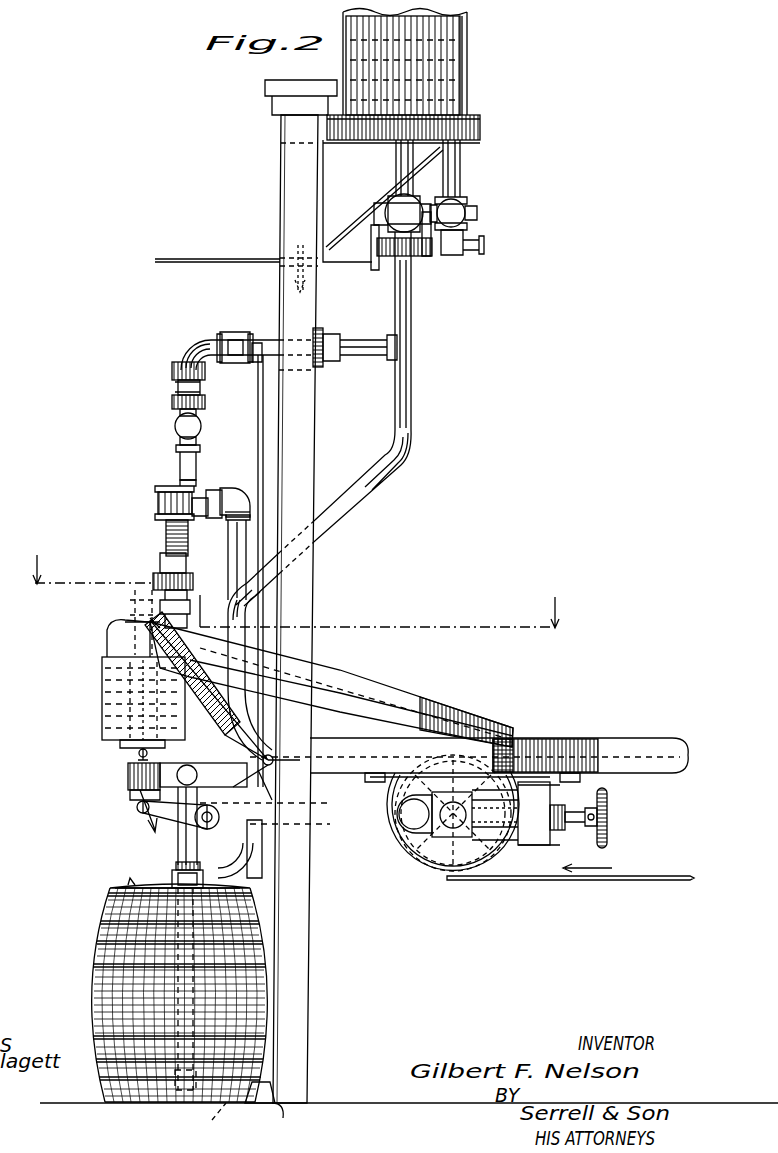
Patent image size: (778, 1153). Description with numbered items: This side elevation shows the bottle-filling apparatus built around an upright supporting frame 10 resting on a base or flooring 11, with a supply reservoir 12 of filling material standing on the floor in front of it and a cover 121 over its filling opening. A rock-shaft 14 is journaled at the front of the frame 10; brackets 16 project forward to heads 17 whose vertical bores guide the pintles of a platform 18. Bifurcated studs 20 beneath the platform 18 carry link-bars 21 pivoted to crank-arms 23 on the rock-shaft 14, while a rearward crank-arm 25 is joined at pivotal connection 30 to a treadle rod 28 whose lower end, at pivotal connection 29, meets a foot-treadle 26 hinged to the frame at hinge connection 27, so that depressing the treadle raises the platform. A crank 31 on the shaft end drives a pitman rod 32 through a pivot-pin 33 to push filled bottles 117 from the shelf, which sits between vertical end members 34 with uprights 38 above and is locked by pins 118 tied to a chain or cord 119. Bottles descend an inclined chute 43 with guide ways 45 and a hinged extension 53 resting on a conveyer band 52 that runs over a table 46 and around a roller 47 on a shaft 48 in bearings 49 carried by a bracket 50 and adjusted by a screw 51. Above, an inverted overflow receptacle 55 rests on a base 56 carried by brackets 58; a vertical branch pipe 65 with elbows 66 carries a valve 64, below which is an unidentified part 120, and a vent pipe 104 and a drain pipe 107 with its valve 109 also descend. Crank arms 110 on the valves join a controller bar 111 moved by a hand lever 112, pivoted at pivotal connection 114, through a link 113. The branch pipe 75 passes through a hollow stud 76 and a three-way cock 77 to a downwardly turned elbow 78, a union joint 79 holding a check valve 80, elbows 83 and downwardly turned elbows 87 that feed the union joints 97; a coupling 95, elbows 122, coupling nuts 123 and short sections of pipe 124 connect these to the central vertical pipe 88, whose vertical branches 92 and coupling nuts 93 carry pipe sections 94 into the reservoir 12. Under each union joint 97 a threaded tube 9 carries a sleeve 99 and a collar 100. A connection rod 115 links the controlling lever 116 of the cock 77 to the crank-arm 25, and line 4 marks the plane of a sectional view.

The section line 4- 4 is at (289, 602).
The tube 9 is at (164, 537).
The upright supporting frame 10 is at (301, 591).
The base or flooring 11 is at (333, 1103).
The reservoir 12 is at (110, 988).
The rock-shaft 14 is at (150, 830).
The brackets 16 is at (203, 775).
The enlarged ends or heads 17 is at (130, 796).
The platform 18 is at (118, 742).
The bifurcated studs 20 is at (138, 753).
The link-bars 21 is at (130, 775).
The crank-arms 23 is at (195, 818).
The crank-arm 25 is at (272, 802).
The foot-treadle 26 is at (265, 1085).
The hinge connection 27 is at (286, 1120).
The treadle rod 28 is at (262, 872).
The pivotal connection 29 is at (212, 1122).
The pivotal connection 30 is at (298, 825).
The crank 31 is at (268, 766).
The pitman rod 32 is at (212, 730).
The pivot-pin 33 is at (270, 756).
The vertical end member 34 is at (143, 698).
The uprights 38 is at (107, 642).
The inclined chute 43 is at (345, 712).
The guide ways 45 is at (390, 700).
The table 46 is at (469, 760).
The roller or cylinder 47 is at (490, 845).
The shaft 48 is at (452, 828).
The bearings 49 is at (440, 830).
The bracket 50 is at (400, 825).
The screw 51 is at (560, 830).
The conveyer band 52 is at (655, 870).
The hinged extension 53 is at (495, 738).
The inverted overflow receptacle 55 is at (462, 72).
The base 56 is at (480, 128).
The brackets 58 is at (385, 192).
The valve 64 is at (467, 211).
The vertical branch pipe 65 is at (460, 182).
The elbows 66 is at (477, 215).
The branch pipe 75 is at (272, 340).
The hollow stud 76 is at (320, 330).
The three way cock 77 is at (235, 335).
The downwardly turned elbow 78 is at (190, 348).
The union joint 79 is at (205, 388).
The check valve 80 is at (176, 385).
The elbow 83 is at (175, 426).
The elbows 87 is at (180, 462).
The vertical pipe 88 is at (230, 546).
The vertical branch 92 is at (176, 866).
The coupling nut 93 is at (172, 880).
The section of pipe 94 is at (172, 989).
The coupling 95 is at (240, 490).
The union joints 97 is at (170, 500).
The interiorly threaded sleeve 99 is at (160, 565).
The collar 100 is at (153, 580).
The vent pipes 104 is at (413, 167).
The drain pipes 107 is at (411, 290).
The valve 109 is at (400, 210).
The crank arm 110 is at (430, 256).
The controller bar 111 is at (412, 258).
The hand lever 112 is at (245, 257).
The link 113 is at (375, 270).
The pivotal connection 114 is at (303, 262).
The connection rod 115 is at (258, 428).
The controlling lever 116 is at (250, 360).
The bottles 117 is at (195, 600).
The pins 118 is at (140, 668).
The chain or cord 119 is at (140, 700).
The outlet 120 is at (476, 248).
The cover 121 is at (126, 884).
The elbow 122 is at (248, 498).
The coupling nuts 123 is at (213, 490).
The short sections of pipe 124 is at (200, 516).